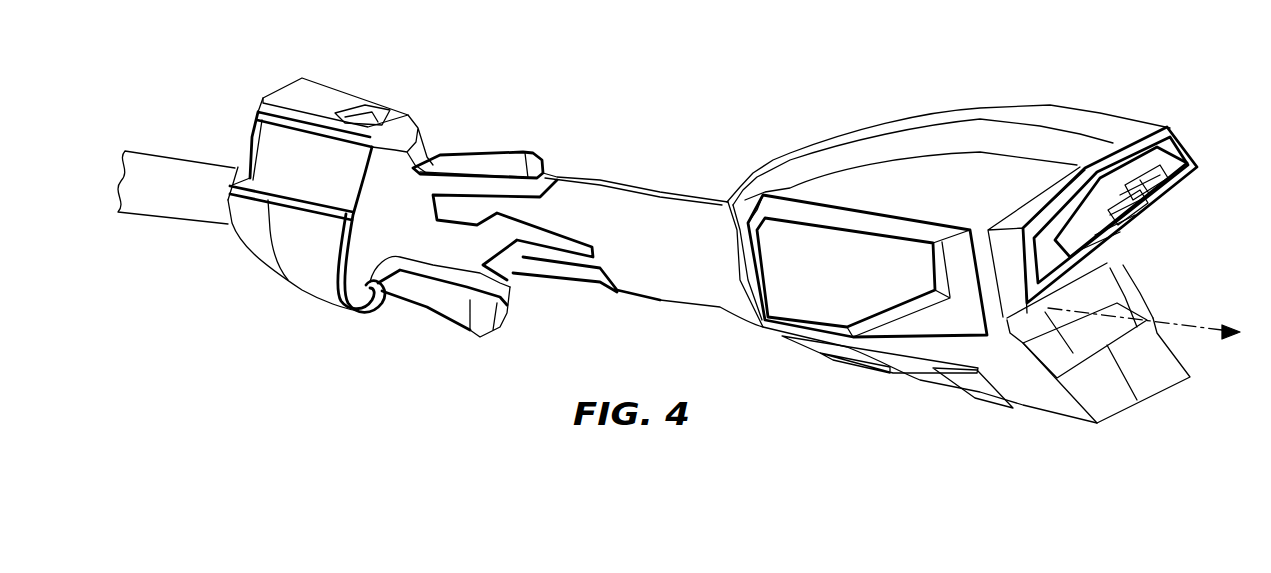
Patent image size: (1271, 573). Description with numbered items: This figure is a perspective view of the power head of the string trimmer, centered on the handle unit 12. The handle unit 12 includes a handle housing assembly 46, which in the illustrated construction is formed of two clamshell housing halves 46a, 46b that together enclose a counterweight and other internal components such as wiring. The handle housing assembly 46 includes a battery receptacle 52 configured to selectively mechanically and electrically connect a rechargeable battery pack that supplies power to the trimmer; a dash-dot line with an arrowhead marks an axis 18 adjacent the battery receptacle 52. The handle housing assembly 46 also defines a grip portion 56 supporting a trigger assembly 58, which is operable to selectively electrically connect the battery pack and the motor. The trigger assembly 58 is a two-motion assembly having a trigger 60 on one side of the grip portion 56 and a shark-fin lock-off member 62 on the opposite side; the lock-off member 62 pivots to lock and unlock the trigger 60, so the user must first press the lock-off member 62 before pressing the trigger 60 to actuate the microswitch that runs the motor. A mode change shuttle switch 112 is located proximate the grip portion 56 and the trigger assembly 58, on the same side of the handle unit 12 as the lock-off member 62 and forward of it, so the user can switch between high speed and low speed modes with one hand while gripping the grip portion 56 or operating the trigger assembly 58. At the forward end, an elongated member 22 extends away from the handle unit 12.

The handle unit 12 is at (733, 68).
The longitudinal axis 18 is at (1203, 326).
The cable 22 is at (187, 207).
The handle housing assembly 46 is at (836, 375).
The clamshell housing half 46a is at (1120, 163).
The clamshell housing half 46b is at (1143, 148).
The battery receptacle 52 is at (1130, 179).
The grip portion 56 is at (620, 320).
The trigger assembly 58 is at (405, 322).
The trigger 60 is at (460, 315).
The lock-off member 62 is at (493, 152).
The mode change shuttle switch 112 is at (382, 110).